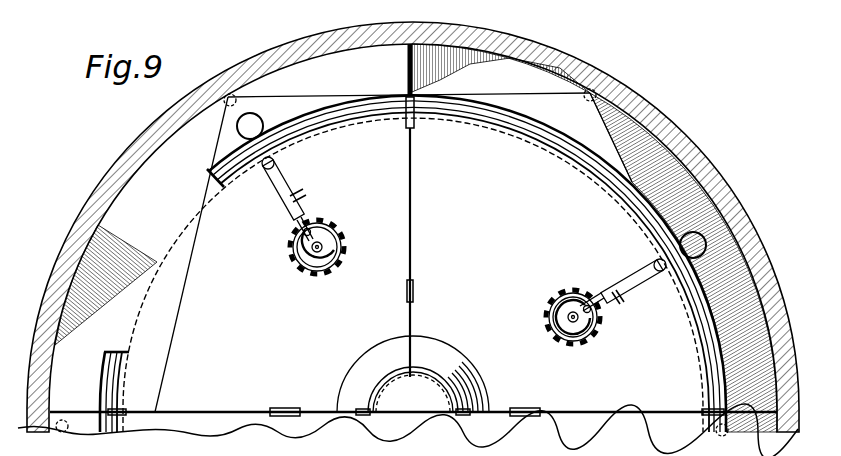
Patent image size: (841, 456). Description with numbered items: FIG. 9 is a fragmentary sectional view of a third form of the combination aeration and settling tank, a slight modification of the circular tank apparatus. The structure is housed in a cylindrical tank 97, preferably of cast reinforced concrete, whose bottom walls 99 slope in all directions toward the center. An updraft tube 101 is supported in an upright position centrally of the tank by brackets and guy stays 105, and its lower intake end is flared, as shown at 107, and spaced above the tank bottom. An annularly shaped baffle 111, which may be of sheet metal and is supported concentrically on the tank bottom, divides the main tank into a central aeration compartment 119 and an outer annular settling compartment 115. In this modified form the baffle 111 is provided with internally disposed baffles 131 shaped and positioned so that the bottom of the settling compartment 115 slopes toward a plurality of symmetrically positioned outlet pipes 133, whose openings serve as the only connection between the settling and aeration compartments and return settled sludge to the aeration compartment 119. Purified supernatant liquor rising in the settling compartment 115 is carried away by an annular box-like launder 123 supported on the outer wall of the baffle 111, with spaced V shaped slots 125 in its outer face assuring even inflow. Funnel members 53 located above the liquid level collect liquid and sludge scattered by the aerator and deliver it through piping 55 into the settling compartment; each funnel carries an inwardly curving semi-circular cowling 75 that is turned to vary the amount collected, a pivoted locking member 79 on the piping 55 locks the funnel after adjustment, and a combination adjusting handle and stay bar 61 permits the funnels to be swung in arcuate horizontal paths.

The cylindrical tank 97 is at (676, 125).
The internally disposed baffles 131 is at (130, 211).
The annularly shaped baffle 111 is at (700, 367).
The outflow channel or launder 123 is at (320, 124).
The settling compartment 115 is at (352, 97).
The V shaped slots 125 is at (520, 100).
The outlet pipes 133 is at (232, 95).
The guy stays 105 is at (412, 202).
The bottom walls 99 is at (545, 420).
The updraft tube 101 is at (428, 358).
The flared intake end 107 is at (466, 362).
The aeration compartment 119 is at (498, 292).
The piping 55 is at (300, 192).
The combination adjusting handle and stay bar 61 is at (293, 200).
The pivoted locking member 79 is at (303, 233).
The semi-circular cowling 75 is at (344, 247).
The funnel member 53 is at (312, 264).